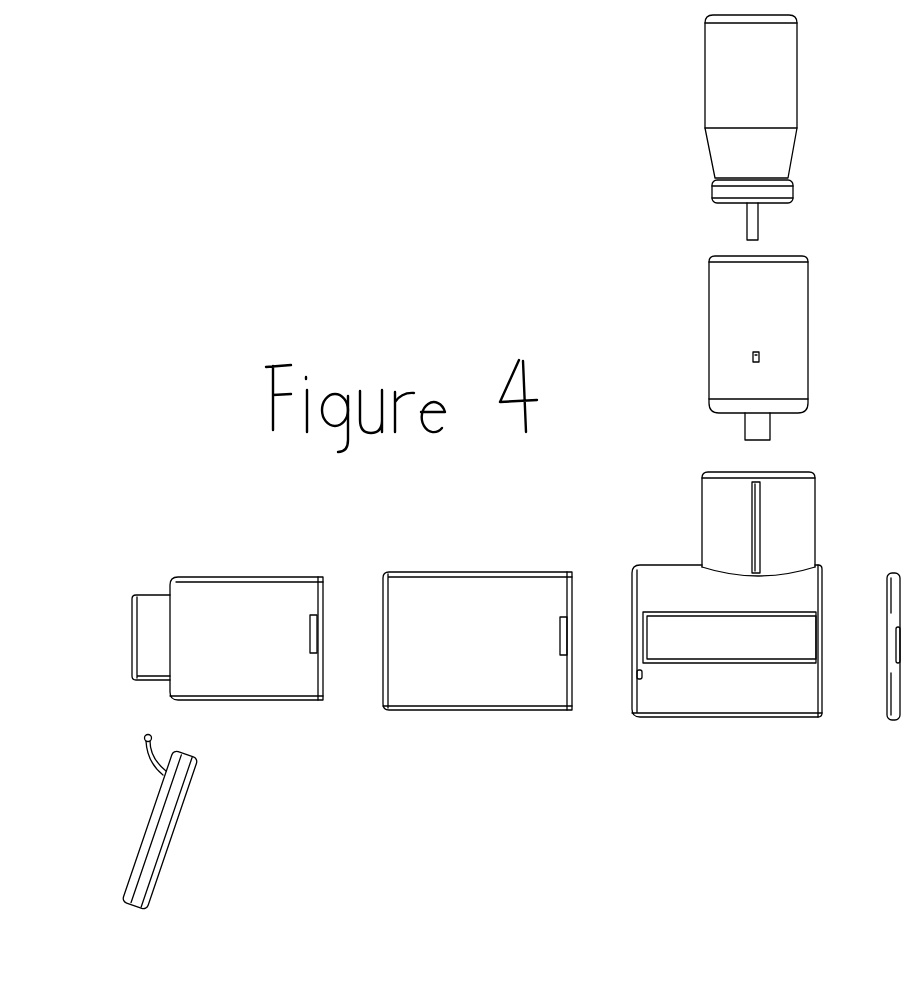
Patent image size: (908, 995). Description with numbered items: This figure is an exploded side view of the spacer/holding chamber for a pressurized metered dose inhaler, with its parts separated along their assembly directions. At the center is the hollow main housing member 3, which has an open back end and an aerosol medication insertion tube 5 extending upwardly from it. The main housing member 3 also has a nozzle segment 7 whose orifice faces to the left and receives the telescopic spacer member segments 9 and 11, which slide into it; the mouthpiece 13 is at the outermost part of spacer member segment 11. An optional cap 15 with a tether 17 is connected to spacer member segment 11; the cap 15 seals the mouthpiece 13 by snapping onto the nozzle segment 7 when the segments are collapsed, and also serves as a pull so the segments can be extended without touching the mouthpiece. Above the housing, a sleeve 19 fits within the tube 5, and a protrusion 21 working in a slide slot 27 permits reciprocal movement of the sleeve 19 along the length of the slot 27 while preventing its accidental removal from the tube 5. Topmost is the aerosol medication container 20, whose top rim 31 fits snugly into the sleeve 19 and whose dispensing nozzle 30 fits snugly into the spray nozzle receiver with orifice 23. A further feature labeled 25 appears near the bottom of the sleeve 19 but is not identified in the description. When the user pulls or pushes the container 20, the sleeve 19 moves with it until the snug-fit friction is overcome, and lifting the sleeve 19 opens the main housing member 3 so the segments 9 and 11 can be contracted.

The main housing member 3 is at (805, 597).
The aerosol medication insertion tube 5 is at (790, 540).
The nozzle segment 7 is at (655, 578).
The spacer member segment 9 is at (405, 583).
The spacer member segment 11 is at (240, 593).
The mouthpiece 13 is at (148, 605).
The cap 15 is at (173, 830).
The tether 17 is at (150, 753).
The sleeve 19 is at (793, 318).
The aerosol medication container 20 is at (790, 62).
The protrusion 21 is at (762, 350).
The orifice 23 is at (745, 430).
The reservoir base 25 is at (795, 407).
The slide slot 27 is at (757, 520).
The dispensing nozzle 30 is at (752, 228).
The top rim 31 is at (782, 200).